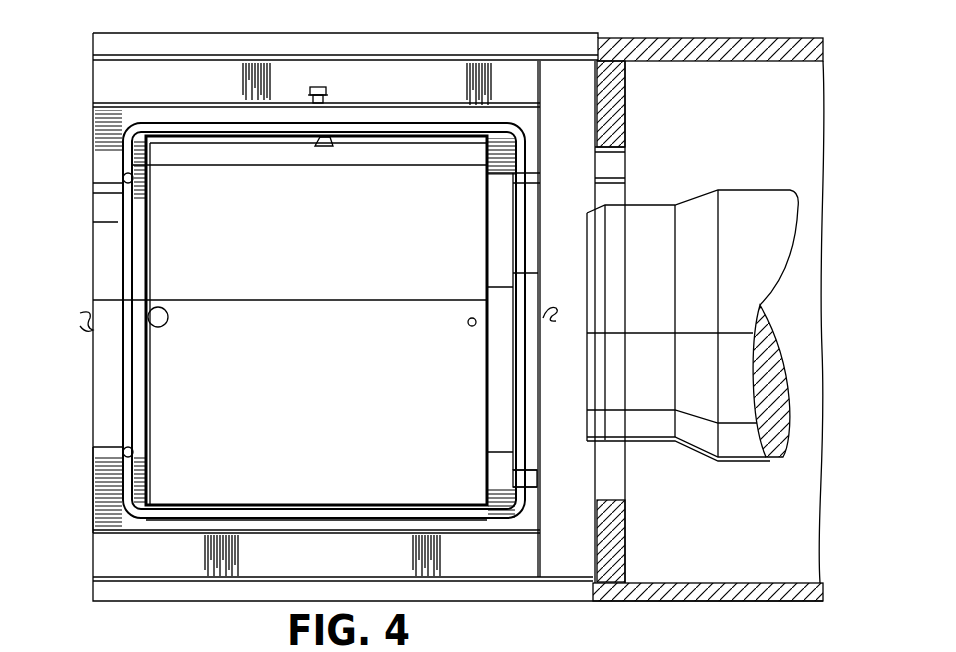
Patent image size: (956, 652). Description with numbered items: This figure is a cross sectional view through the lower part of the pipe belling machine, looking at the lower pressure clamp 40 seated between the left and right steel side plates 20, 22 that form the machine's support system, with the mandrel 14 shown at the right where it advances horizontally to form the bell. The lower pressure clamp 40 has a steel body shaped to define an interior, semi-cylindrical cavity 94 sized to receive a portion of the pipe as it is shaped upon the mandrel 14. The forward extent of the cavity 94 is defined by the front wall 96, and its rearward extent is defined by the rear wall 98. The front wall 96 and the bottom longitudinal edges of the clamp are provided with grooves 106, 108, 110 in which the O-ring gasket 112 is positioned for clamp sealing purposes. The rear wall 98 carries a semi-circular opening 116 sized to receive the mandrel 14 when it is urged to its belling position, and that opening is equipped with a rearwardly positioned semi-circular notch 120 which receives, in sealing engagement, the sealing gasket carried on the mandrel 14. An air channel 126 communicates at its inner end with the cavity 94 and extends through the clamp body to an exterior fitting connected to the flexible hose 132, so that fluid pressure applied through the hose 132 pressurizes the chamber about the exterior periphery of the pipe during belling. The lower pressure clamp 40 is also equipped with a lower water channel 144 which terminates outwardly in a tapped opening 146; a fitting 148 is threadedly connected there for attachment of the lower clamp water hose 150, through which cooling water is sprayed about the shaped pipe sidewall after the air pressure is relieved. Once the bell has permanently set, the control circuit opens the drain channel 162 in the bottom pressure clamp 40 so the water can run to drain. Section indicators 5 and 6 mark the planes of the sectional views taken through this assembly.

The section line 5- 5 is at (128, 67).
The section line 6- 6 is at (523, 78).
The mandrel 14 is at (726, 190).
The left side plate 20 is at (638, 42).
The right side plate 22 is at (700, 601).
The lower pressure clamp 40 is at (178, 536).
The semi-cylindrical cavity 94 is at (167, 283).
The front wall 96 is at (101, 163).
The rear wall 98 is at (590, 322).
The groove 106 is at (128, 396).
The groove 108 is at (442, 125).
The groove 110 is at (395, 510).
The O-ring gasket 112 is at (270, 117).
The semi-circular opening 116 is at (528, 393).
The semi-circular notch 120 is at (531, 437).
The air channel 126 is at (468, 322).
The hose 132 is at (557, 318).
The lower water channel 144 is at (332, 146).
The tapped opening 146 is at (330, 100).
The fitting 148 is at (326, 94).
The lower clamp water hose 150 is at (312, 95).
The drain channel 162 is at (165, 326).